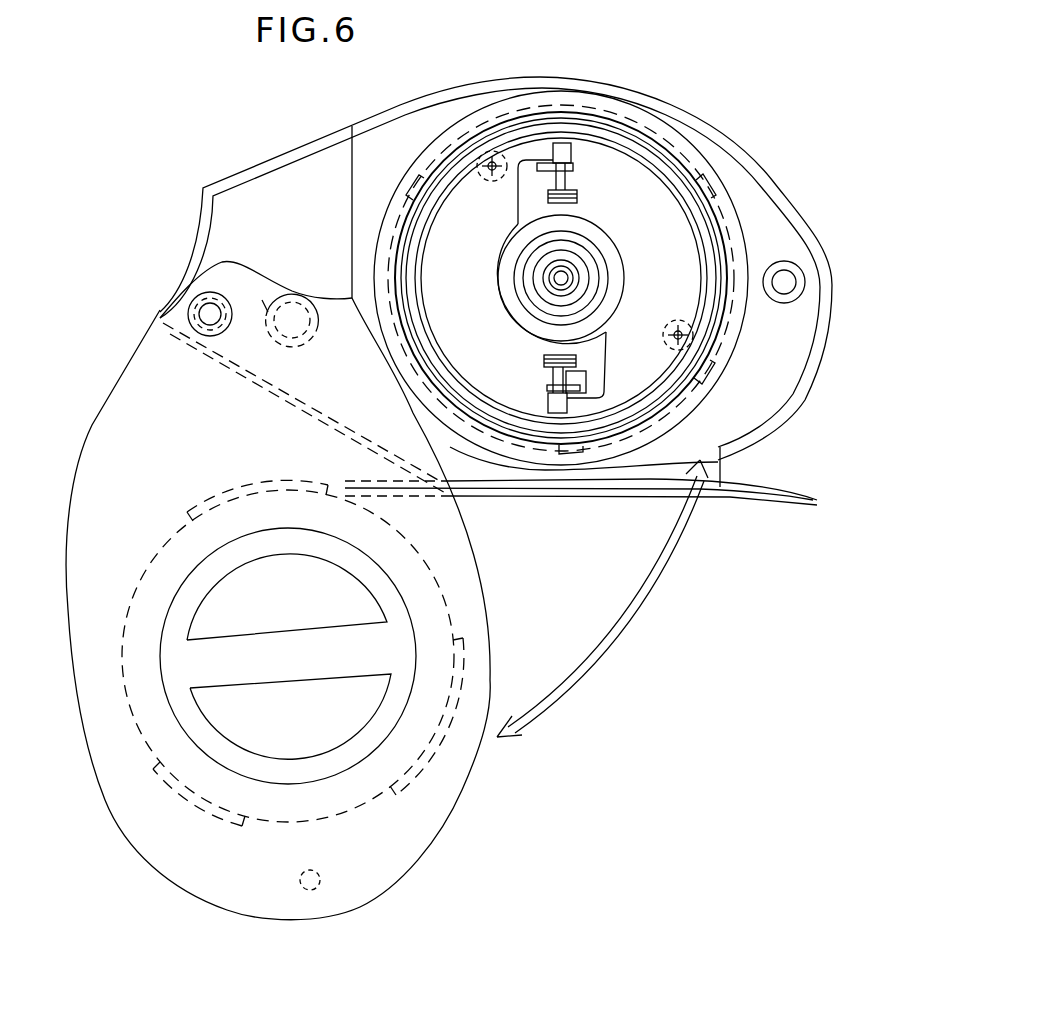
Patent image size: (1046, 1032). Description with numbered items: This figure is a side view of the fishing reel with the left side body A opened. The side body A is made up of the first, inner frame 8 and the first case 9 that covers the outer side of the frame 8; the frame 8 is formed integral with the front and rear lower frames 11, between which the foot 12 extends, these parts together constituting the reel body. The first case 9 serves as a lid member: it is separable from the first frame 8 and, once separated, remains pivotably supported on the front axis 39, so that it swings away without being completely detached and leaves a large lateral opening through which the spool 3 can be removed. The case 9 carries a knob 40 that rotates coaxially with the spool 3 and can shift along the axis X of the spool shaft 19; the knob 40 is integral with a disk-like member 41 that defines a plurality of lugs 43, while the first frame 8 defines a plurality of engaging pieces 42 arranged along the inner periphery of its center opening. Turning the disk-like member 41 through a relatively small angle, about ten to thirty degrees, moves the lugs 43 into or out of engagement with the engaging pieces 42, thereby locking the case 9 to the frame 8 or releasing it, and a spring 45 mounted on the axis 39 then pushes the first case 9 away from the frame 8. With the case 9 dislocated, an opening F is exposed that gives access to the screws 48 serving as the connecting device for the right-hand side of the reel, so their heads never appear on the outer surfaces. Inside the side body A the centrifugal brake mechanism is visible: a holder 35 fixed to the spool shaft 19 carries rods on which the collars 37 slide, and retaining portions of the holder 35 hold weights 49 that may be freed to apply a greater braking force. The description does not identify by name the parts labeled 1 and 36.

The reel body 1 is at (274, 342).
The spool 3 is at (407, 265).
The first frame 8 is at (197, 248).
The first case 9 is at (150, 320).
The left side body A is at (96, 205).
The lower frames 11 is at (721, 462).
The foot 12 is at (733, 503).
The spool shaft 19 is at (573, 262).
The axis X is at (572, 278).
The holder 35 is at (491, 279).
The bracket 36 is at (530, 184).
The collars 37 is at (572, 150).
The front axis 39 is at (210, 325).
The knob 40 is at (172, 600).
The disk-like member 41 is at (168, 540).
The engaging pieces 42 is at (407, 198).
The lugs 43 is at (232, 487).
The spring 45 is at (212, 312).
The screws 48 is at (480, 178).
The weights 49 is at (547, 354).
The opening F is at (705, 173).